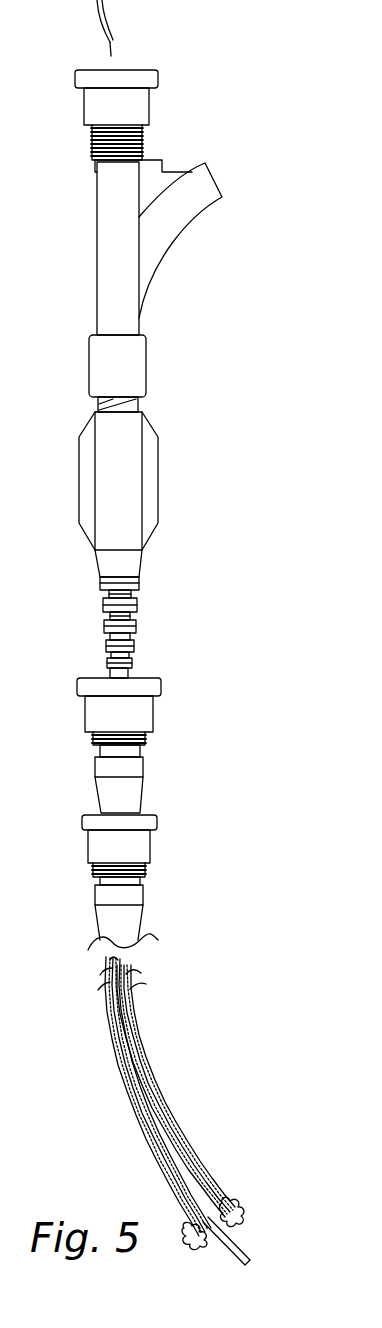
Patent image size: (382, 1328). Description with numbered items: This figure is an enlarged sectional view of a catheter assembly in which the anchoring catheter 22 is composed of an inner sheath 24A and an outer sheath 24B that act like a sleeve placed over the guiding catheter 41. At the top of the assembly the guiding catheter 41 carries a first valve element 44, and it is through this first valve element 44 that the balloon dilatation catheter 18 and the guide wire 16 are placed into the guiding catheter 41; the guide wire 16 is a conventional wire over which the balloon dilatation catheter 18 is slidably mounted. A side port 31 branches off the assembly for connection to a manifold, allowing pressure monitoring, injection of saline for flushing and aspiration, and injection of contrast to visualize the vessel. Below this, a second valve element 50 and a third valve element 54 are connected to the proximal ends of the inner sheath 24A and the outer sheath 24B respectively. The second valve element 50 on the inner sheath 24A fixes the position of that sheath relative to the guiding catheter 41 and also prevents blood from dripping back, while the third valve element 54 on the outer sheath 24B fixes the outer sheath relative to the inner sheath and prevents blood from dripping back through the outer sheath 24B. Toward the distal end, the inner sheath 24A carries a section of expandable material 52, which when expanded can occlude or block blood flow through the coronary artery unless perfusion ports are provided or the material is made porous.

The guide wire 16 is at (113, 43).
The balloon dilatation catheter 18 is at (99, 13).
The anchoring catheter 22 is at (155, 1096).
The inner sheath 24A is at (150, 1153).
The outer sheath 24B is at (165, 1108).
The side port 31 is at (190, 229).
The guiding catheter 41 is at (128, 674).
The first valve element 44 is at (150, 104).
The second valve element 50 is at (153, 714).
The section of expandable material 52 is at (239, 1206).
The third valve element 54 is at (150, 847).